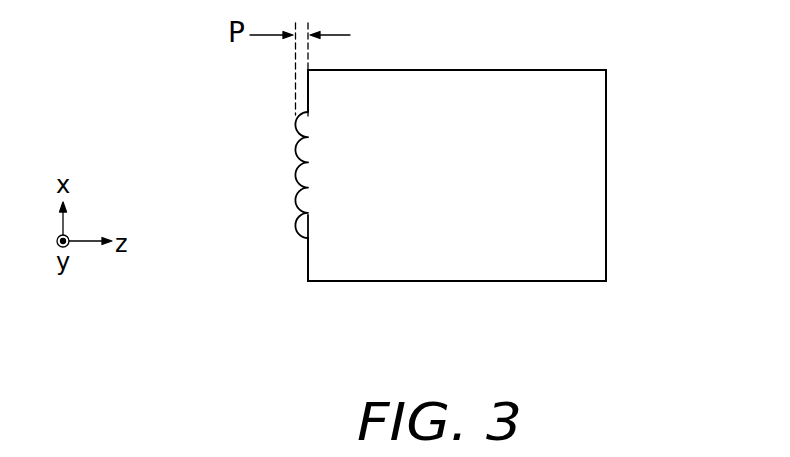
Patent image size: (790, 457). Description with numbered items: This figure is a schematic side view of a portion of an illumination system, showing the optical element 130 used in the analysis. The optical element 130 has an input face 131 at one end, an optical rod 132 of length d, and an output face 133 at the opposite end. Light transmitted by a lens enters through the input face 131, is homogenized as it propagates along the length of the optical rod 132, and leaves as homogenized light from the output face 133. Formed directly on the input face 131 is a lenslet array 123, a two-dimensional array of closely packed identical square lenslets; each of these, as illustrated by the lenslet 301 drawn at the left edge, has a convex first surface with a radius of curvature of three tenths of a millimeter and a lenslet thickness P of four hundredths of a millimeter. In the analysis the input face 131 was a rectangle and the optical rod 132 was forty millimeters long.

The optical element 130 is at (456, 82).
The lenslet 301 is at (293, 175).
The lenslet array 123 is at (295, 232).
The input face 131 is at (307, 262).
The optical rod 132 is at (459, 281).
The output face 133 is at (606, 108).